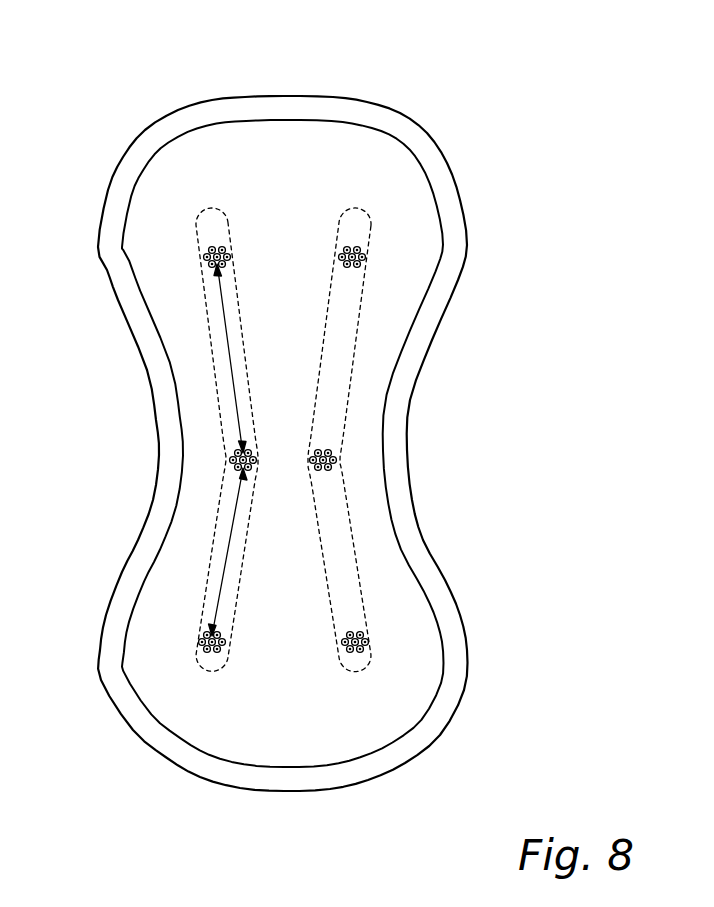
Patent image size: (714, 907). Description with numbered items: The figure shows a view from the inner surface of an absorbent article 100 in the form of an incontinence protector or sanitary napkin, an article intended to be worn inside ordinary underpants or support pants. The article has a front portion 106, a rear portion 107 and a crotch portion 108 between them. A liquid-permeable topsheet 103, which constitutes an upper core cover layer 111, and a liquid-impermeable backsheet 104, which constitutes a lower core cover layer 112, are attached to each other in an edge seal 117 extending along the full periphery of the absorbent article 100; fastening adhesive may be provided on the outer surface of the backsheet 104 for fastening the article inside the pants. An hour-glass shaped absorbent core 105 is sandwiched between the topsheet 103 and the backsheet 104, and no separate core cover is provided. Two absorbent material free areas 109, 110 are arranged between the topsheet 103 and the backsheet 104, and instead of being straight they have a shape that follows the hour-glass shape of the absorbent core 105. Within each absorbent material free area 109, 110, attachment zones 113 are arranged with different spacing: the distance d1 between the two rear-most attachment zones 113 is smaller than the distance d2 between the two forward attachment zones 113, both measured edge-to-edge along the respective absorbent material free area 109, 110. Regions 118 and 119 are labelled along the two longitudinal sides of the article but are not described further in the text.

The absorbent article 100 is at (350, 399).
The liquid-permeable topsheet 103 is at (322, 467).
The liquid-impermeable backsheet 104 is at (350, 443).
The absorbent core 105 is at (387, 567).
The front portion 106 is at (266, 173).
The rear portion 107 is at (273, 713).
The crotch portion 108 is at (208, 455).
The absorbent material free area 109 is at (217, 359).
The absorbent material free area 110 is at (330, 338).
The upper core cover layer 111 is at (322, 467).
The lower core cover layer 112 is at (403, 650).
The attachment zones 113 is at (360, 253).
The edge seal 117 is at (412, 479).
The left side region 118 is at (163, 538).
The right side region 119 is at (398, 523).
The distance d1 is at (227, 565).
The distance d2 is at (229, 340).